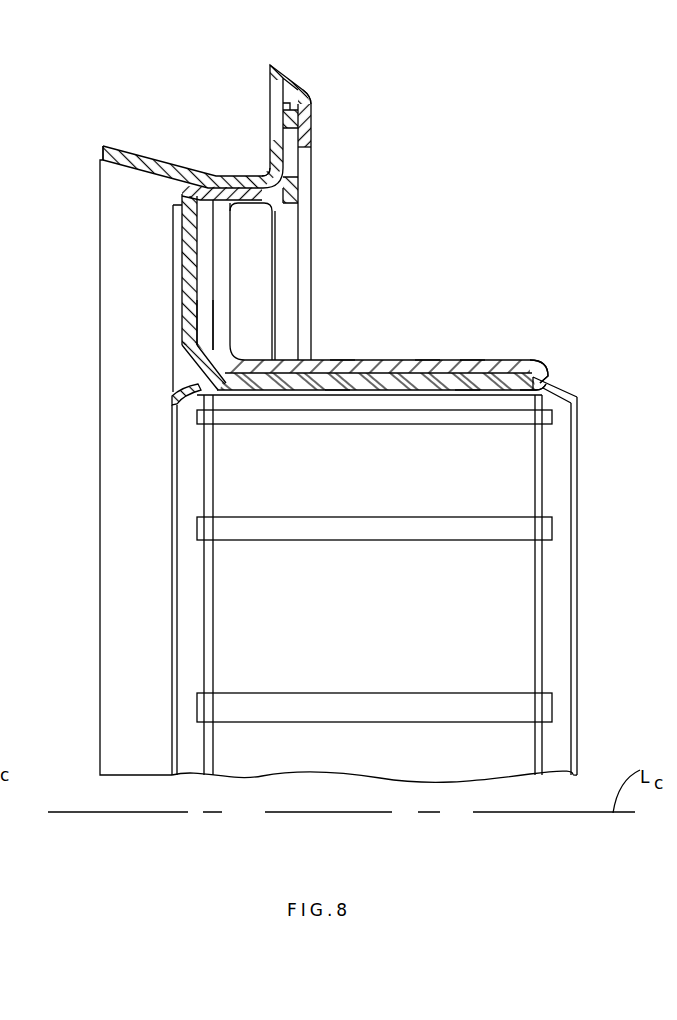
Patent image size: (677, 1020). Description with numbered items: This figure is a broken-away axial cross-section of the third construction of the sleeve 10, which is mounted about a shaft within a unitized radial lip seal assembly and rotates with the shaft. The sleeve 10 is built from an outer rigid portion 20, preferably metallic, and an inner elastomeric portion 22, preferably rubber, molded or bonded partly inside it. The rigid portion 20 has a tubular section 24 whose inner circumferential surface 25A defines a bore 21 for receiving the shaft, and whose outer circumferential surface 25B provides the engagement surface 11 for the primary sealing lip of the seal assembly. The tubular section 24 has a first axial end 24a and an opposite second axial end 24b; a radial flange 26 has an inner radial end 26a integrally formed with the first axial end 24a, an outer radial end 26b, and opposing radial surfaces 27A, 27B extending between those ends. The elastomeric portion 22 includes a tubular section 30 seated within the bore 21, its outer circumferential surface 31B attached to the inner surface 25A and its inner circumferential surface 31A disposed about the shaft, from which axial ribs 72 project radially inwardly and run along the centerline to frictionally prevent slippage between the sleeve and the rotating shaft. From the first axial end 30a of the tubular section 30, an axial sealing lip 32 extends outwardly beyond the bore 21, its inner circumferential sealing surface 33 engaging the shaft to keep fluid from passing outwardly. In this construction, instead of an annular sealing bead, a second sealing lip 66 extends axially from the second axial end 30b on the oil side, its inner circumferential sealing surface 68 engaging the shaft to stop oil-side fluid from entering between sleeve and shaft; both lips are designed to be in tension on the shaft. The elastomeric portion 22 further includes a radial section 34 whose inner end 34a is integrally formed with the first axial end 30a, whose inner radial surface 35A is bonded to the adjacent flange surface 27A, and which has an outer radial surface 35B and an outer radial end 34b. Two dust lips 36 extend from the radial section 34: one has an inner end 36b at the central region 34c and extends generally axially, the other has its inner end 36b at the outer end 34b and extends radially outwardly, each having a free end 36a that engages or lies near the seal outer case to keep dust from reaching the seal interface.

The sleeve 10 is at (470, 210).
The engagement surface 11 is at (424, 360).
The outer rigid portion 20 is at (288, 252).
The bore 21 is at (470, 608).
The inner elastomeric portion 22 is at (168, 582).
The tubular section 24 is at (440, 357).
The first axial end 24a is at (220, 362).
The second axial end 24b is at (538, 362).
The inner circumferential surface 25A is at (336, 390).
The outer circumferential surface 25B is at (340, 360).
The radial flange 26 is at (212, 280).
The inner radial end 26a is at (205, 340).
The outer radial end 26b is at (290, 120).
The radial surface 27A is at (195, 305).
The radial surface 27B is at (232, 271).
The tubular section 30 is at (397, 384).
The first axial end 30a is at (222, 395).
The second axial end 30b is at (530, 386).
The inner circumferential surface 31A is at (464, 390).
The outer circumferential surface 31B is at (471, 360).
The axial sealing lip 32 is at (168, 388).
The inner circumferential sealing surface 33 is at (170, 450).
The radial section 34 is at (180, 283).
The inner end 34a is at (200, 355).
The outer radial end 34b is at (290, 103).
The central region 34c is at (200, 183).
The inner radial surface 35A is at (225, 251).
The outer radial surface 35B is at (187, 224).
The dust lip 36 is at (153, 160).
The free end 36a is at (103, 145).
The inner end 36b is at (185, 170).
The second sealing lip 66 is at (582, 376).
The inner circumferential sealing surface 68 is at (580, 472).
The axial rib 72 is at (311, 530).